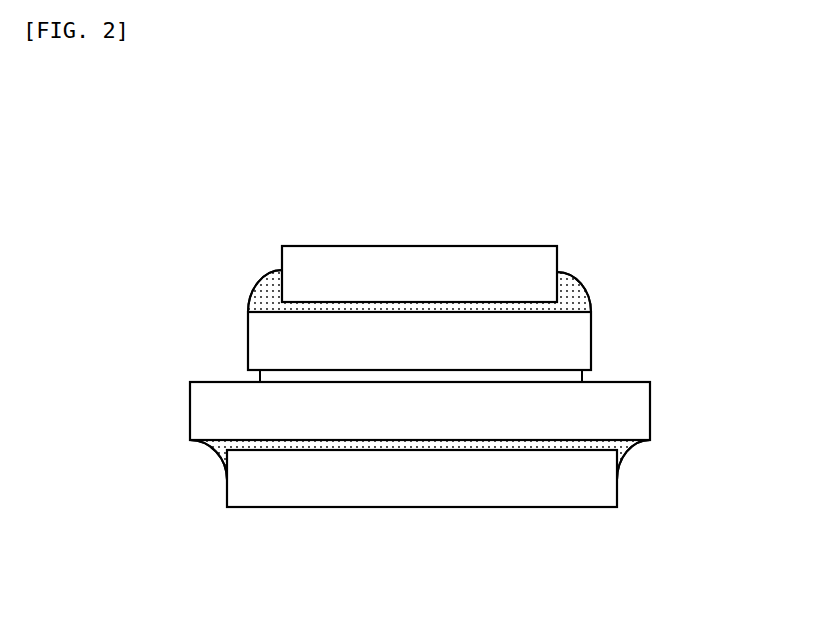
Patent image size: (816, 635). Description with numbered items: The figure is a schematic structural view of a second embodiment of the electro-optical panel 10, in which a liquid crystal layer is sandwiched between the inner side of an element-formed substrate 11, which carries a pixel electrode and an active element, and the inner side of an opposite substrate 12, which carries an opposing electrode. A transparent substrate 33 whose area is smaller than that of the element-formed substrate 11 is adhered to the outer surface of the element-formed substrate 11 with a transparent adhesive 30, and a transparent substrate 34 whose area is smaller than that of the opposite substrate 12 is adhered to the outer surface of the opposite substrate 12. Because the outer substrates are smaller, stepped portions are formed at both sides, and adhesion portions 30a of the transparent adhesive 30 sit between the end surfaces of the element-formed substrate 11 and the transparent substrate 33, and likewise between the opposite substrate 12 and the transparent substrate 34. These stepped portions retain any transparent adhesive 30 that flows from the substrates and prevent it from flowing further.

The electro-optical panel 10 is at (174, 373).
The element-formed substrate 11 is at (652, 405).
The opposite substrate 12 is at (592, 340).
The transparent adhesive 30 is at (465, 300).
The adhesion portion 30a is at (262, 302).
The transparent substrate 33 is at (333, 507).
The transparent substrate 34 is at (363, 246).